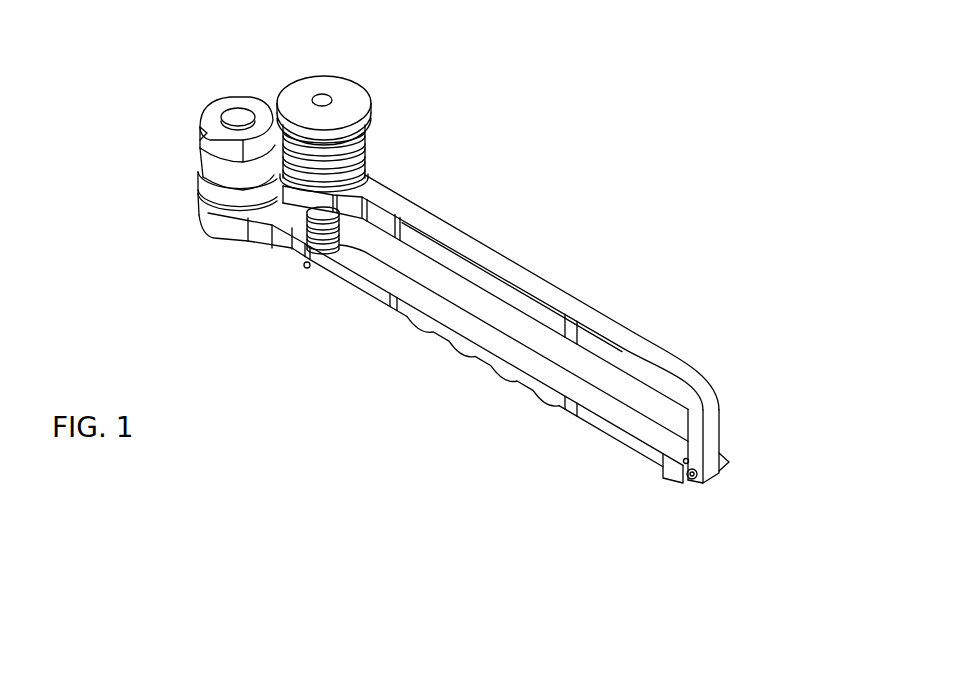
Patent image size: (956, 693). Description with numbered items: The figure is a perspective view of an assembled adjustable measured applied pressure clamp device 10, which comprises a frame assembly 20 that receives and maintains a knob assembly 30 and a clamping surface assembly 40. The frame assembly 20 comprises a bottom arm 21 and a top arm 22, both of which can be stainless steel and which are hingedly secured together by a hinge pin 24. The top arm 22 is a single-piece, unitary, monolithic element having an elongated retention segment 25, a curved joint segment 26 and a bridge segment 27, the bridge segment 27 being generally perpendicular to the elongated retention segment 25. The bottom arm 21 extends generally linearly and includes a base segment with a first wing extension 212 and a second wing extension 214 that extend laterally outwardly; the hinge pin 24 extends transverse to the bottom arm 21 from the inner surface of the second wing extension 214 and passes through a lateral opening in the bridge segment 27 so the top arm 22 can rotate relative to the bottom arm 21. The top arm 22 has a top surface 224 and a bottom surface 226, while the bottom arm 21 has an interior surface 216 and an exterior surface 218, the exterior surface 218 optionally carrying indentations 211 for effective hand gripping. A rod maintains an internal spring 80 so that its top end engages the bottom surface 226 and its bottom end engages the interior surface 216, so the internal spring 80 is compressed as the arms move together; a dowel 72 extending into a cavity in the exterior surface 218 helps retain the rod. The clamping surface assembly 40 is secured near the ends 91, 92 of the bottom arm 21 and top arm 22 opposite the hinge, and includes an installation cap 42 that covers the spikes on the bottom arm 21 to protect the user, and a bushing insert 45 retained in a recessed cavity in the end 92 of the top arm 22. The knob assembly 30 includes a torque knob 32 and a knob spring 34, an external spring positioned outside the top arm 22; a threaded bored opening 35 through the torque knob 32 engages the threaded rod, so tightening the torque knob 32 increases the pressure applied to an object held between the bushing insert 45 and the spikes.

The adjustable measured applied pressure clamp device 10 is at (692, 147).
The frame assembly 20 is at (710, 330).
The bottom arm 21 is at (623, 434).
The top arm 22 is at (604, 318).
The hinge pin 24 is at (690, 487).
The elongated retention segment 25 is at (538, 277).
The curved joint segment 26 is at (713, 386).
The bridge segment 27 is at (714, 443).
The knob assembly 30 is at (390, 50).
The torque knob 32 is at (365, 101).
The knob spring 34 is at (369, 151).
The bored opening 35 is at (318, 96).
The clamping surface assembly 40 is at (197, 78).
The installation cap 42 is at (217, 197).
The bushing insert 45 is at (218, 162).
The dowel 72 is at (298, 277).
The internal spring 80 is at (346, 229).
The end of the bottom arm 91 is at (215, 233).
The end of the top arm 92 is at (197, 118).
The indentations 211 is at (413, 326).
The first wing extension 212 is at (656, 479).
The second wing extension 214 is at (731, 467).
The interior surface 216 is at (495, 346).
The exterior surface 218 is at (558, 408).
The top surface 224 is at (488, 248).
The bottom surface 226 is at (533, 321).